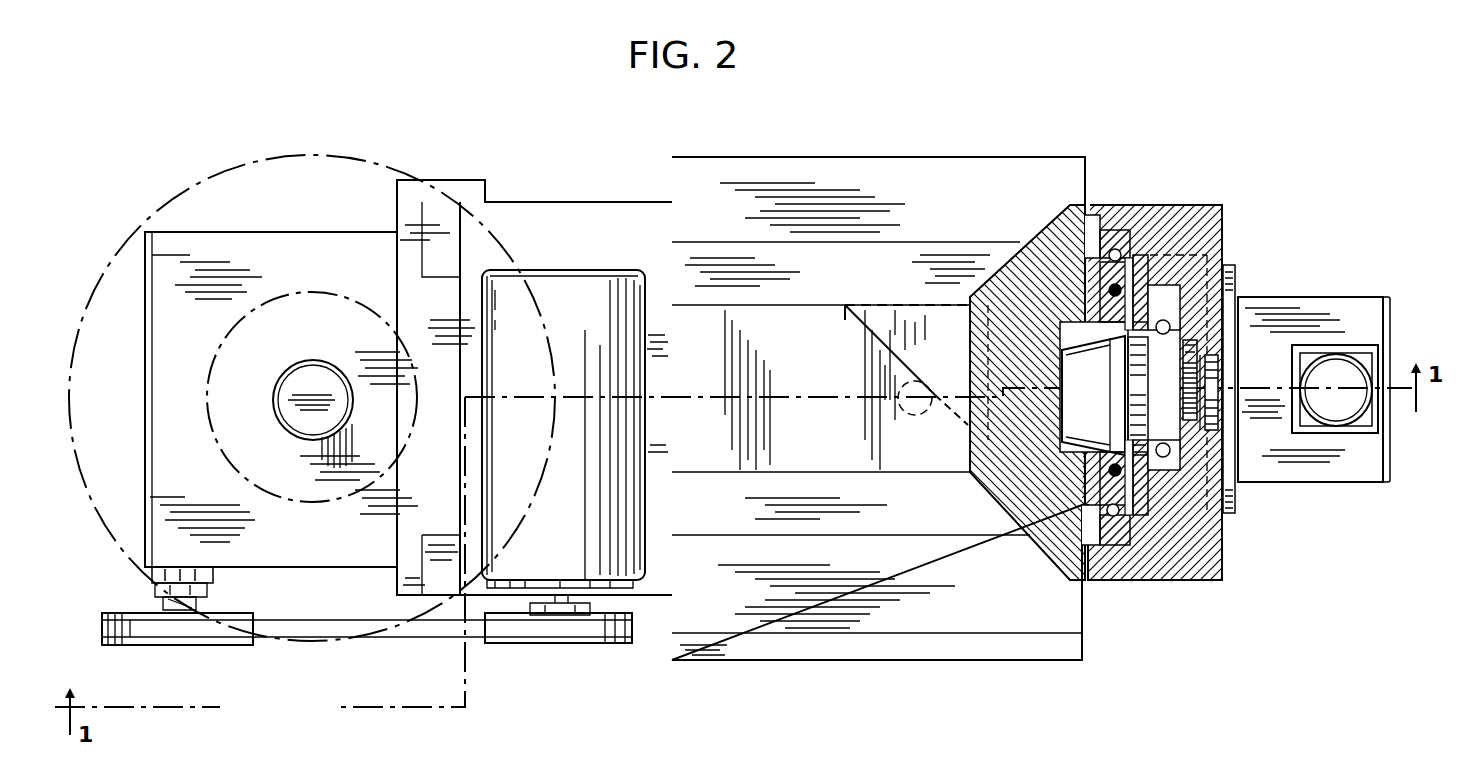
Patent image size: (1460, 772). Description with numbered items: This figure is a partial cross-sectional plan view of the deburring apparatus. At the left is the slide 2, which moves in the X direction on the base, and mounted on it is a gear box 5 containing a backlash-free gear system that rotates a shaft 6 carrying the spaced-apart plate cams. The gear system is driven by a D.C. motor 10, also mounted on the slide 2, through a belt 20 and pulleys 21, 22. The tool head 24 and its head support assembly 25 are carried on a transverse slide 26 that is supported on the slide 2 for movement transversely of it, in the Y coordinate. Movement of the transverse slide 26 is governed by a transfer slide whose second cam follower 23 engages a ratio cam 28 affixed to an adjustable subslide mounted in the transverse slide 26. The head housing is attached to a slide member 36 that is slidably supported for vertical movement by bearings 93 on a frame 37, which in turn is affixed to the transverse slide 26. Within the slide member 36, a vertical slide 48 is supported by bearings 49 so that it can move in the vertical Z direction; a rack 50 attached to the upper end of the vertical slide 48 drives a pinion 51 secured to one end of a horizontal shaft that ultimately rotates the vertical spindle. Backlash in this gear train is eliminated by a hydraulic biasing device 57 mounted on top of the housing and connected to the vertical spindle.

The slide 2 is at (572, 215).
The gear box 5 is at (265, 254).
The shaft 6 is at (313, 382).
The D.C. motor 10 is at (580, 530).
The belt 20 is at (343, 634).
The pulley 21 is at (200, 646).
The pulley 22 is at (555, 645).
The second cam follower 23 is at (900, 415).
The tool head 24 is at (1337, 291).
The head support assembly 25 is at (1123, 594).
The transverse slide 26 is at (928, 617).
The ratio cam 28 is at (885, 345).
The slide member 36 is at (1222, 558).
The frame 37 is at (1032, 258).
The vertical slide 48 is at (1162, 378).
The bearing 49 is at (1160, 320).
The rack 50 is at (1197, 340).
The pinion 51 is at (1200, 378).
The hydraulic device 57 is at (1336, 415).
The bearing 93 is at (1115, 248).